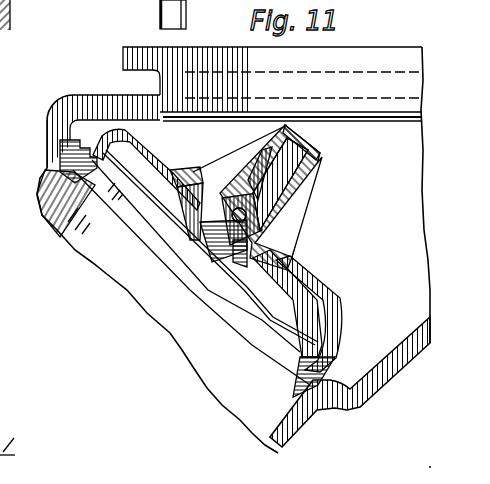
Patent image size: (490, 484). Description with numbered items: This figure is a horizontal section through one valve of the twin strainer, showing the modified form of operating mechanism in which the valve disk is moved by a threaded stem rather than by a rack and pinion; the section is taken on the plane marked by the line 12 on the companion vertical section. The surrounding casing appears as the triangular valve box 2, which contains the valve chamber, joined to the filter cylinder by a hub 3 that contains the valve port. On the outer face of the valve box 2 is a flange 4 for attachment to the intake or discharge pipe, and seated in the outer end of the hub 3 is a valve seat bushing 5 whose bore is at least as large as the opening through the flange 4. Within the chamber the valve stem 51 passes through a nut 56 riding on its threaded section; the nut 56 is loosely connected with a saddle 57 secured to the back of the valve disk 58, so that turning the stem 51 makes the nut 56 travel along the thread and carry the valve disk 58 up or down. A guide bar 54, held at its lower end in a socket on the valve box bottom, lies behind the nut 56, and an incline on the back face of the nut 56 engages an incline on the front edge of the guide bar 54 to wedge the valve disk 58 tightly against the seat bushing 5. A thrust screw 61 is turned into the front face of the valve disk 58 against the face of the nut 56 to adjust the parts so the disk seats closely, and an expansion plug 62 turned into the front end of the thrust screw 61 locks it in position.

The valve box 2 is at (350, 247).
The hub 3 is at (36, 165).
The flange 4 is at (122, 60).
The valve seat bushing 5 is at (295, 380).
The section line 12— 12 is at (310, 135).
The valve stem 51 is at (299, 226).
The guide bar 54 is at (280, 178).
The nut 56 is at (193, 172).
The saddle 57 is at (320, 153).
The valve disk 58 is at (322, 312).
The thrust screw 61 is at (188, 242).
The expansion plug 62 is at (222, 264).